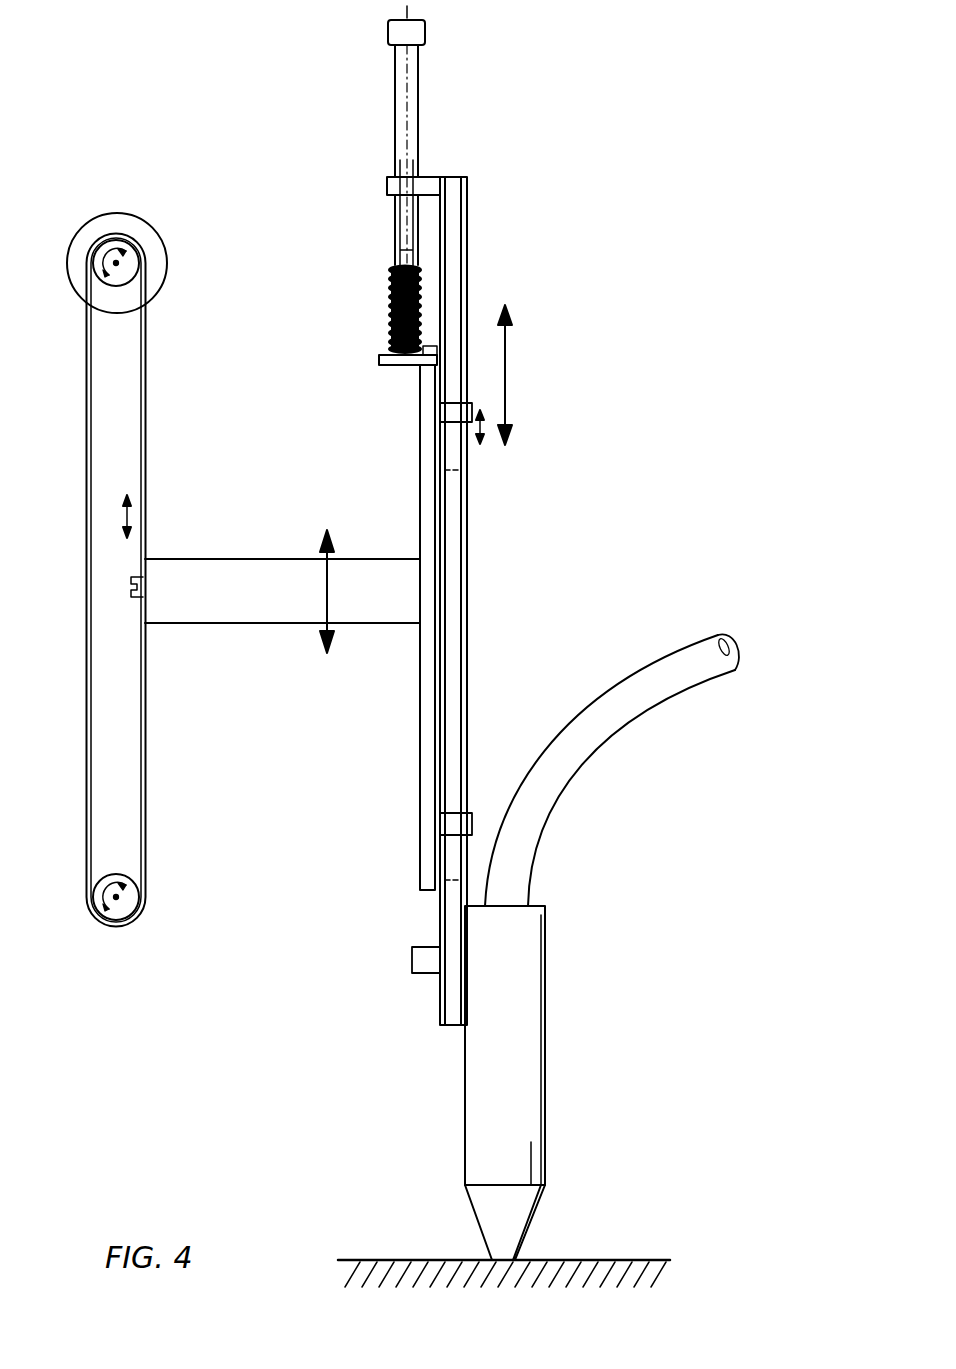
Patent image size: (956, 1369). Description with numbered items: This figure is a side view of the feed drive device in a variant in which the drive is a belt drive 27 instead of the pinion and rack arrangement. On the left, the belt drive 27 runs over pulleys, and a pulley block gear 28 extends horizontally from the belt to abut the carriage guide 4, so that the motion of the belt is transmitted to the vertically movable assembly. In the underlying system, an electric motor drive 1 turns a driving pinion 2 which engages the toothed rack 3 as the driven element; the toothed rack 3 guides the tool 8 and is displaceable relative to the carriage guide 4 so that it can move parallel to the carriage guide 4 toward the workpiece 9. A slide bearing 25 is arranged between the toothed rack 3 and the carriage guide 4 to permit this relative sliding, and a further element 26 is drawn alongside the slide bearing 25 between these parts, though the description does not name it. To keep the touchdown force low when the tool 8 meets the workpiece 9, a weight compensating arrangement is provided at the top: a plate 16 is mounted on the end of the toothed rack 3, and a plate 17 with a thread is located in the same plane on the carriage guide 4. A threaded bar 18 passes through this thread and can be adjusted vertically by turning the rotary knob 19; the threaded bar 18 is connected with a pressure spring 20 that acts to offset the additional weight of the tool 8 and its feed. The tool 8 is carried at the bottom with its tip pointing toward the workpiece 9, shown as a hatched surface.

The electric motor drive 1 is at (160, 257).
The driving pinion 2 is at (314, 746).
The toothed rack 3 is at (340, 885).
The carriage guide 4 is at (455, 576).
The tool 8 is at (531, 1074).
The workpiece 9 is at (638, 1260).
The plate 16 is at (390, 366).
The plate 17 is at (393, 184).
The threaded bar 18 is at (410, 138).
The rotary knob 19 is at (428, 32).
The pressure spring 20 is at (389, 318).
The slide bearing 25 is at (438, 642).
The bar 26 is at (425, 602).
The belt drive 27 is at (137, 252).
The pulley block gear 28 is at (262, 610).